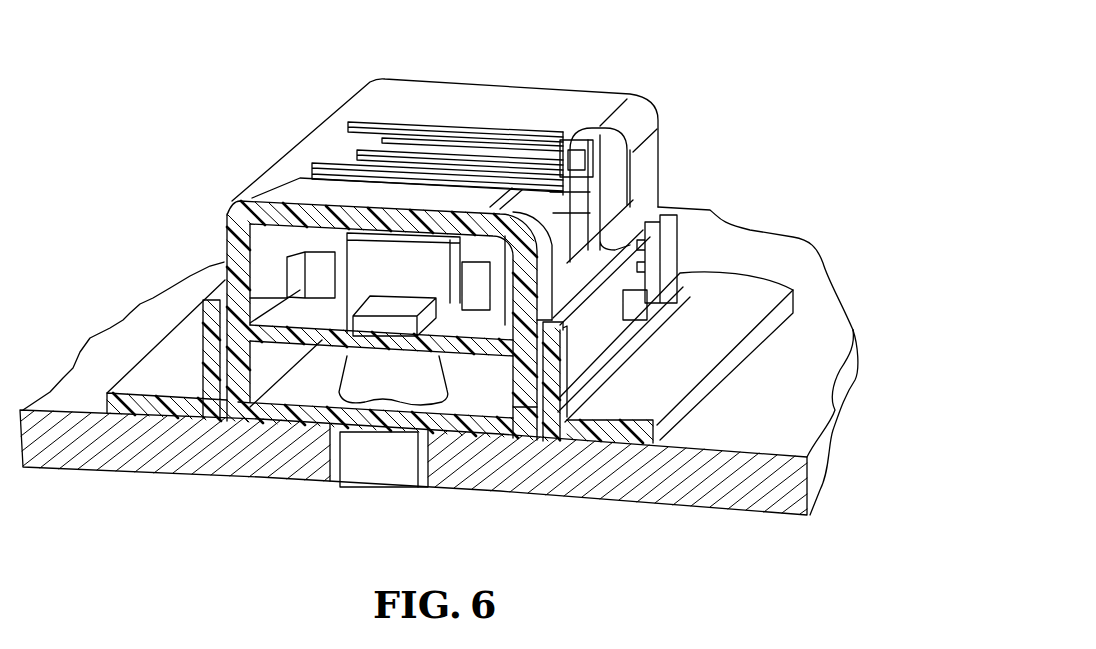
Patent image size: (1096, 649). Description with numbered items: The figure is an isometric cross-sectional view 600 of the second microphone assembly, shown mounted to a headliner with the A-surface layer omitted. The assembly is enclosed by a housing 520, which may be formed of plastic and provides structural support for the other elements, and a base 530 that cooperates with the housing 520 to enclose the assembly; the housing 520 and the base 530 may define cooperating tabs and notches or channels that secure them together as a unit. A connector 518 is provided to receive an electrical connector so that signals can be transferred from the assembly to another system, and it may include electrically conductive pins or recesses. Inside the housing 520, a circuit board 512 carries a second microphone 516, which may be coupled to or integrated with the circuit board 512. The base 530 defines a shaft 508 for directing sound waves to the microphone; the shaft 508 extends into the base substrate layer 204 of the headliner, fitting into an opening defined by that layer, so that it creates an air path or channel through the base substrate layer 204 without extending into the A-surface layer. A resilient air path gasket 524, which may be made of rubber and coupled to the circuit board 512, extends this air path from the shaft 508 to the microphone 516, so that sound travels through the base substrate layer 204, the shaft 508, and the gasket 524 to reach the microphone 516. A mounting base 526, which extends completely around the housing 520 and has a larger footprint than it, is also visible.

The connector assembly 600 is at (720, 60).
The base substrate layer 204 is at (682, 508).
The shaft 508 is at (378, 490).
The circuit board 512 is at (224, 263).
The second microphone 516 is at (420, 300).
The connector 518 is at (547, 176).
The housing 520 is at (227, 237).
The air path gasket 524 is at (343, 375).
The mounting base 526 is at (643, 403).
The base 530 is at (340, 487).